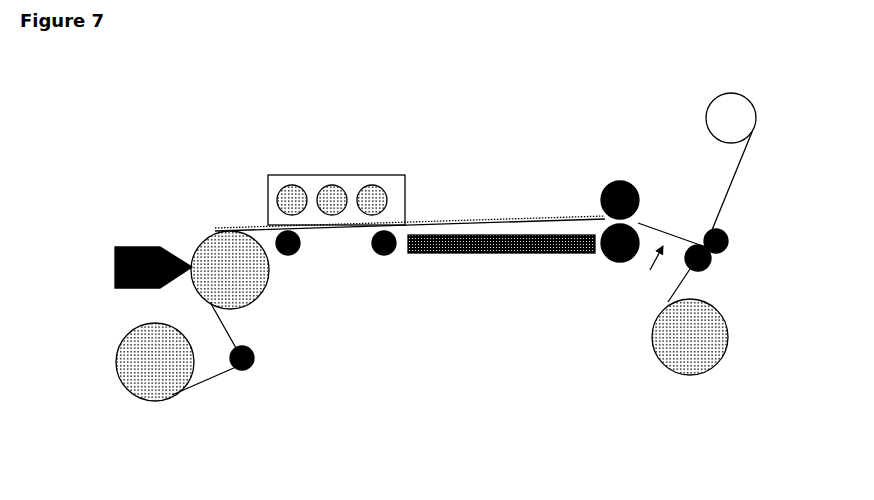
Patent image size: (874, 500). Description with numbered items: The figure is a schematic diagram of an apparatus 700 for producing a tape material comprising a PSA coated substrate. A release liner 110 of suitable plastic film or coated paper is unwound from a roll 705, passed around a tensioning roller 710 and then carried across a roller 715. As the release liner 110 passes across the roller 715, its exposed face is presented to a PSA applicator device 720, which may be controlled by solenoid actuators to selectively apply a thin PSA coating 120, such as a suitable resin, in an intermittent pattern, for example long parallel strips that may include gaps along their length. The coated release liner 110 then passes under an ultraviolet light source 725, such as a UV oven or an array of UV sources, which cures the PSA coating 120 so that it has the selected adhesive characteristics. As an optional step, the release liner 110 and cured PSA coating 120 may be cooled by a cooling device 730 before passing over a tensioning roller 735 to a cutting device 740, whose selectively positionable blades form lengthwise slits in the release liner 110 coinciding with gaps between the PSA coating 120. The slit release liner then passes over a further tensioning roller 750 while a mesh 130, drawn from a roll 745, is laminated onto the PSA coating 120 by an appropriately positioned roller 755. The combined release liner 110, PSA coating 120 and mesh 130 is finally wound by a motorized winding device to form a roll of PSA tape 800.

The apparatus 700 is at (497, 82).
The roll 705 is at (135, 358).
The tensioning roller 710 is at (255, 358).
The roller 715 is at (260, 297).
The PSA applicator device 720 is at (115, 278).
The ultraviolet light source 725 is at (340, 175).
The cooling device 730 is at (530, 255).
The tensioning roller 735 is at (618, 263).
The cutting device 740 is at (655, 269).
The roll of mesh 745 is at (735, 105).
The tensioning roller 750 is at (700, 243).
The roller 755 is at (728, 247).
The roll of PSA tape 800 is at (717, 352).
The release liner 110 is at (200, 392).
The PSA coating 120 is at (452, 223).
The mesh 130 is at (732, 183).